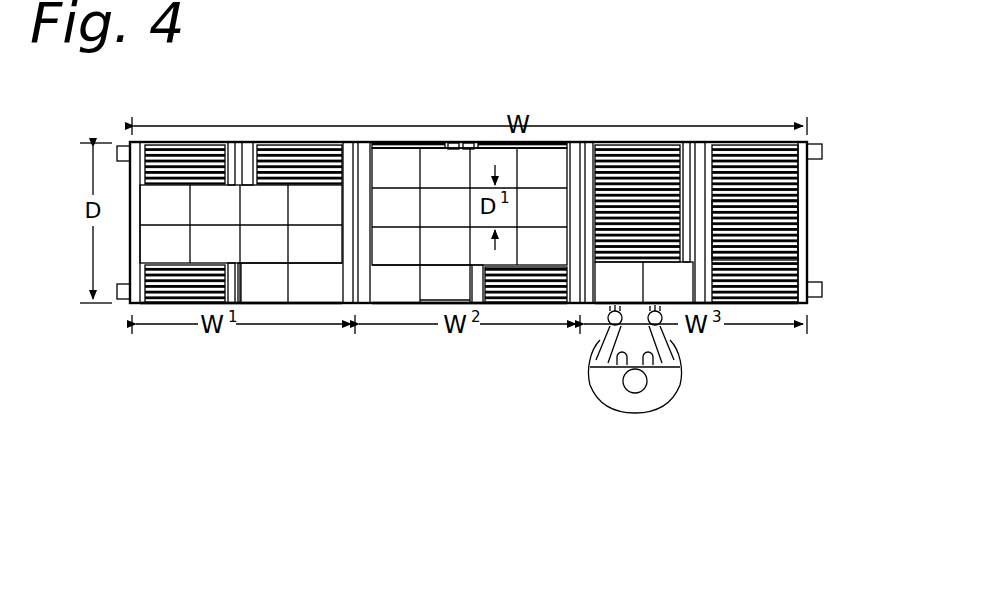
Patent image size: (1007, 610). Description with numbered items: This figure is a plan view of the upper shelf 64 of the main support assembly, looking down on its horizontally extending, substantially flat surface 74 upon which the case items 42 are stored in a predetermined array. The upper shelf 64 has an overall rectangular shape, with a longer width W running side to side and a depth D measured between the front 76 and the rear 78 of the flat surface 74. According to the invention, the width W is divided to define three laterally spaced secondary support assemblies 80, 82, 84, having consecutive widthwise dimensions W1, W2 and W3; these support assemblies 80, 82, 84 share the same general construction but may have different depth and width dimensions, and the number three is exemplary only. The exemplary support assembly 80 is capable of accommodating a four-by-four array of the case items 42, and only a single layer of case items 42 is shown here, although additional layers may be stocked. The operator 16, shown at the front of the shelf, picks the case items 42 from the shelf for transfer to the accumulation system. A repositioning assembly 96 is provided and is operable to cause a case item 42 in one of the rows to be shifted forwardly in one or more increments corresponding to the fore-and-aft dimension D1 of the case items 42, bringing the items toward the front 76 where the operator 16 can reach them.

The operator 16 is at (662, 395).
The case items 42 is at (220, 240).
The upper shelf 64 is at (740, 178).
The flat surface 74 is at (778, 243).
The front 76 is at (418, 302).
The rear 78 is at (450, 145).
The secondary support assembly 80 is at (267, 300).
The secondary support assembly 82 is at (434, 306).
The secondary support assembly 84 is at (687, 306).
The repositioning assembly 96 is at (245, 138).